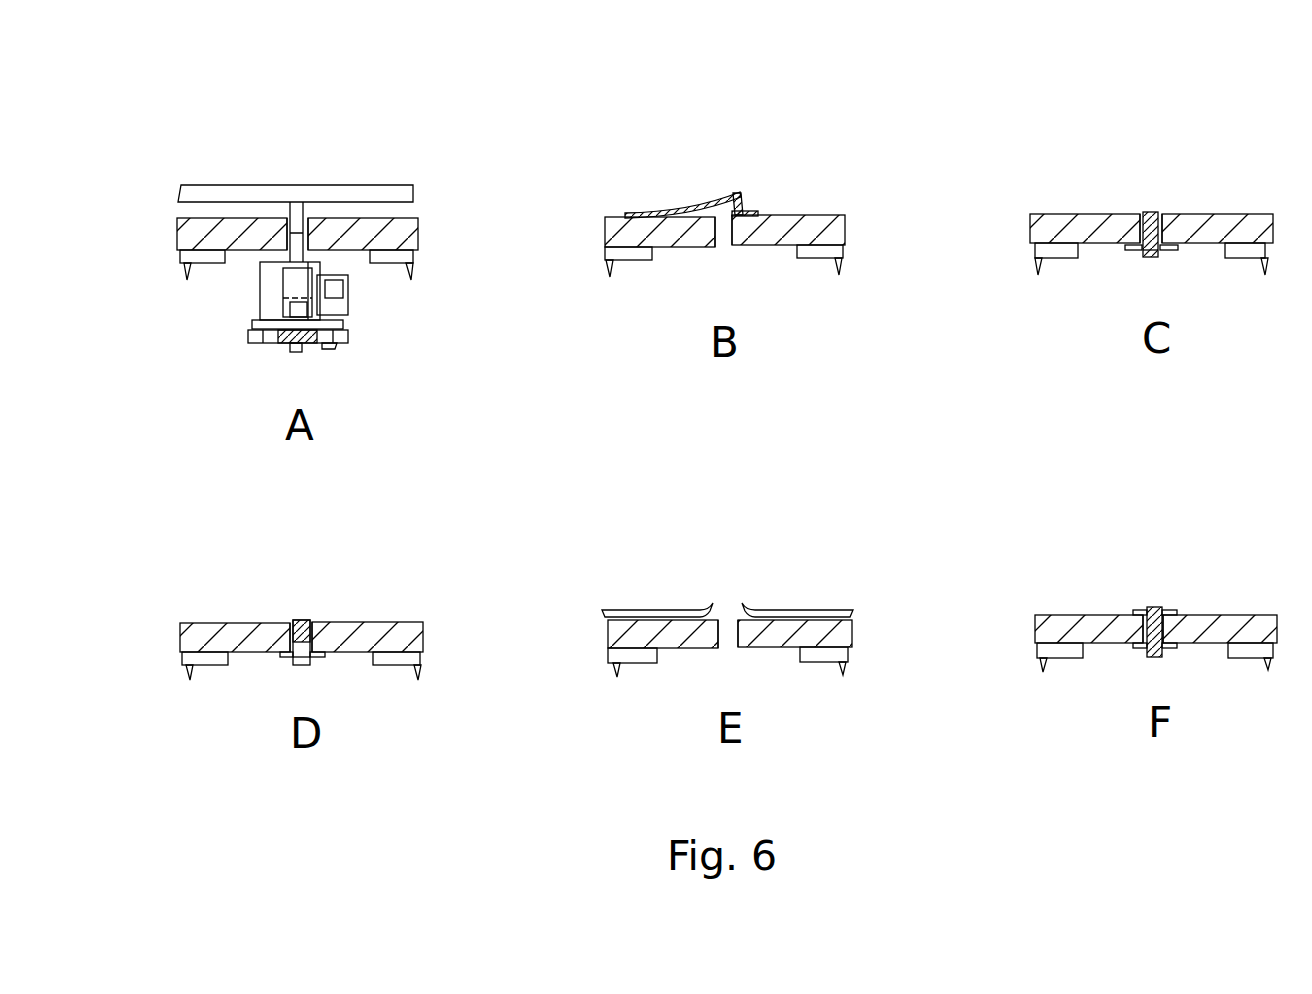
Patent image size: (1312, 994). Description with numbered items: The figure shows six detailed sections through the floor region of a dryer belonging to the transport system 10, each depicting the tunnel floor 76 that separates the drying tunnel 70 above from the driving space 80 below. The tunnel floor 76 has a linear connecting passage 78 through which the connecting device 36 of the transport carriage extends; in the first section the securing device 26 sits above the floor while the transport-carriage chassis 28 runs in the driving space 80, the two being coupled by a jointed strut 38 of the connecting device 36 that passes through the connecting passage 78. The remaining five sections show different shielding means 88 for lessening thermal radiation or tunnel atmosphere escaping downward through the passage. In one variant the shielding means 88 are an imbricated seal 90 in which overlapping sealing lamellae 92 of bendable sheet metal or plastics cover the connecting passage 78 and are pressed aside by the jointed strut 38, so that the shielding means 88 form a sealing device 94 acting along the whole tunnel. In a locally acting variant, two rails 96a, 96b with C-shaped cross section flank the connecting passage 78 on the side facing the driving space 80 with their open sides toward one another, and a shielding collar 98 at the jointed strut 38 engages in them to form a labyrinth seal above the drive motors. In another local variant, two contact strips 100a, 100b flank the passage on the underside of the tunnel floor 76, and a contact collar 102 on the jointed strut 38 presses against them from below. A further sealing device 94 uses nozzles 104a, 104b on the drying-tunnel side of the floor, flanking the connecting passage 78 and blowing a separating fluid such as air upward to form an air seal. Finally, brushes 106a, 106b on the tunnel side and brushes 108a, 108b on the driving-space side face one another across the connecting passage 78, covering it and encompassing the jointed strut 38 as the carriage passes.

In FIG. 6A, the transport system 10 is at (362, 306).
In FIG. 6A, the securing device 26 is at (420, 189).
In FIG. 6A, the transport-carriage chassis 28 is at (242, 336).
In FIG. 6A, the connecting device 36 is at (316, 210).
In FIG. 6C, the connecting device 36 is at (1168, 233).
In FIG. 6D, the connecting device 36 is at (316, 641).
In FIG. 6F, the connecting device 36 is at (1172, 632).
In FIG. 6C, the jointed strut 38 is at (1140, 217).
In FIG. 6D, the jointed strut 38 is at (292, 625).
In FIG. 6F, the jointed strut 38 is at (1143, 623).
In FIG. 6A, the drying tunnel 70 is at (228, 164).
In FIG. 6B, the drying tunnel 70 is at (630, 164).
In FIG. 6C, the drying tunnel 70 is at (1078, 160).
In FIG. 6D, the drying tunnel 70 is at (213, 579).
In FIG. 6E, the drying tunnel 70 is at (643, 539).
In FIG. 6F, the drying tunnel 70 is at (1097, 570).
In FIG. 6A, the tunnel floor 76 is at (193, 232).
In FIG. 6B, the tunnel floor 76 is at (620, 235).
In FIG. 6C, the tunnel floor 76 is at (1043, 237).
In FIG. 6D, the tunnel floor 76 is at (193, 635).
In FIG. 6E, the tunnel floor 76 is at (620, 635).
In FIG. 6F, the tunnel floor 76 is at (1045, 628).
In FIG. 6A, the connecting passage 78 is at (297, 207).
In FIG. 6B, the connecting passage 78 is at (717, 233).
In FIG. 6C, the connecting passage 78 is at (1153, 212).
In FIG. 6D, the connecting passage 78 is at (310, 620).
In FIG. 6E, the connecting passage 78 is at (723, 638).
In FIG. 6F, the connecting passage 78 is at (1153, 607).
In FIG. 6A, the driving space 80 is at (230, 324).
In FIG. 6B, the driving space 80 is at (637, 324).
In FIG. 6C, the driving space 80 is at (1067, 320).
In FIG. 6D, the driving space 80 is at (222, 747).
In FIG. 6E, the driving space 80 is at (638, 740).
In FIG. 6F, the driving space 80 is at (1080, 737).
In FIG. 6B, the shielding means 88 is at (728, 138).
In FIG. 6C, the shielding means 88 is at (1170, 203).
In FIG. 6D, the shielding means 88 is at (319, 617).
In FIG. 6E, the shielding means 88 is at (720, 543).
In FIG. 6F, the shielding means 88 is at (1136, 591).
In FIG. 6B, the imbricated seal 90 is at (743, 186).
In FIG. 6B, the sealing lamella 92 is at (713, 195).
In FIG. 6B, the sealing device 94 is at (700, 194).
In FIG. 6E, the sealing device 94 is at (701, 583).
In FIG. 6F, the sealing device 94 is at (1141, 583).
In FIG. 6C, the rail 96a is at (1133, 253).
In FIG. 6C, the rail 96b is at (1177, 253).
In FIG. 6C, the shielding collar 98 is at (1163, 253).
In FIG. 6D, the contact strip 100a is at (280, 657).
In FIG. 6D, the contact strip 100b is at (327, 657).
In FIG. 6D, the contact collar 102 is at (313, 660).
In FIG. 6E, the nozzle 104a is at (658, 608).
In FIG. 6E, the nozzle 104b is at (815, 607).
In FIG. 6F, the brush 106a is at (1138, 608).
In FIG. 6F, the brush 106b is at (1165, 610).
In FIG. 6F, the brush 108a is at (1143, 647).
In FIG. 6F, the brush 108b is at (1167, 647).